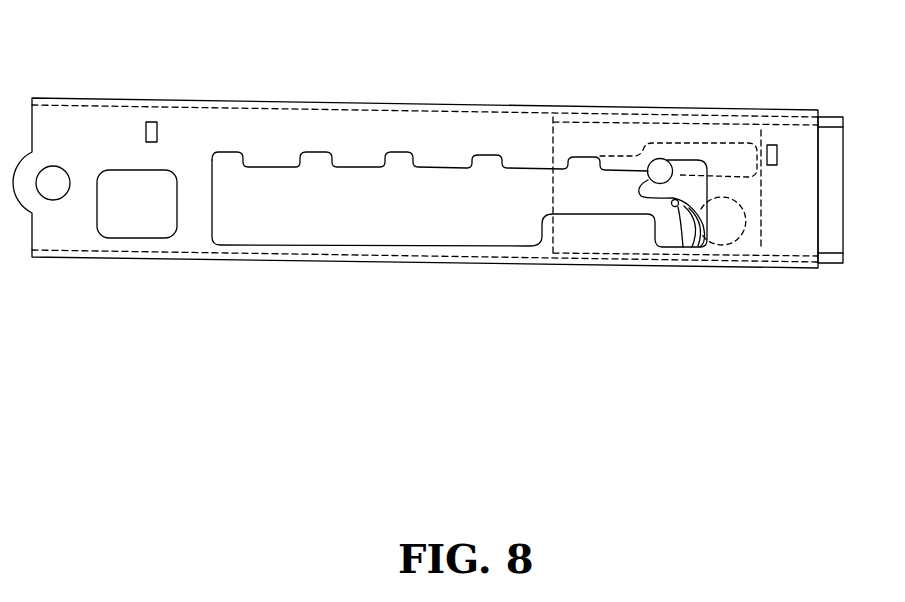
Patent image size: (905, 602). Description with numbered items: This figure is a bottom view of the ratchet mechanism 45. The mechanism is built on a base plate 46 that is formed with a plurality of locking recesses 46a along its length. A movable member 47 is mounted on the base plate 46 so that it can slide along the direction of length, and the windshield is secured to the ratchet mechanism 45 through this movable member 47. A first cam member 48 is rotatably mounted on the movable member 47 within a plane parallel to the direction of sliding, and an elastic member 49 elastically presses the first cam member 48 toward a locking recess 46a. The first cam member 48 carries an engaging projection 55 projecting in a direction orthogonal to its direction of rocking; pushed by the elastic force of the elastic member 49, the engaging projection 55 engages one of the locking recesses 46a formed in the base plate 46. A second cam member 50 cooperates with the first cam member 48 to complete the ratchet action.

The ratchet mechanism 45 is at (461, 271).
The base plate 46 is at (250, 100).
The locking recesses 46a is at (565, 172).
The movable member 47 is at (818, 265).
The first cam member 48 is at (640, 186).
The elastic member 49 is at (672, 207).
The second cam member 50 is at (600, 156).
The engaging projection 55 is at (708, 160).